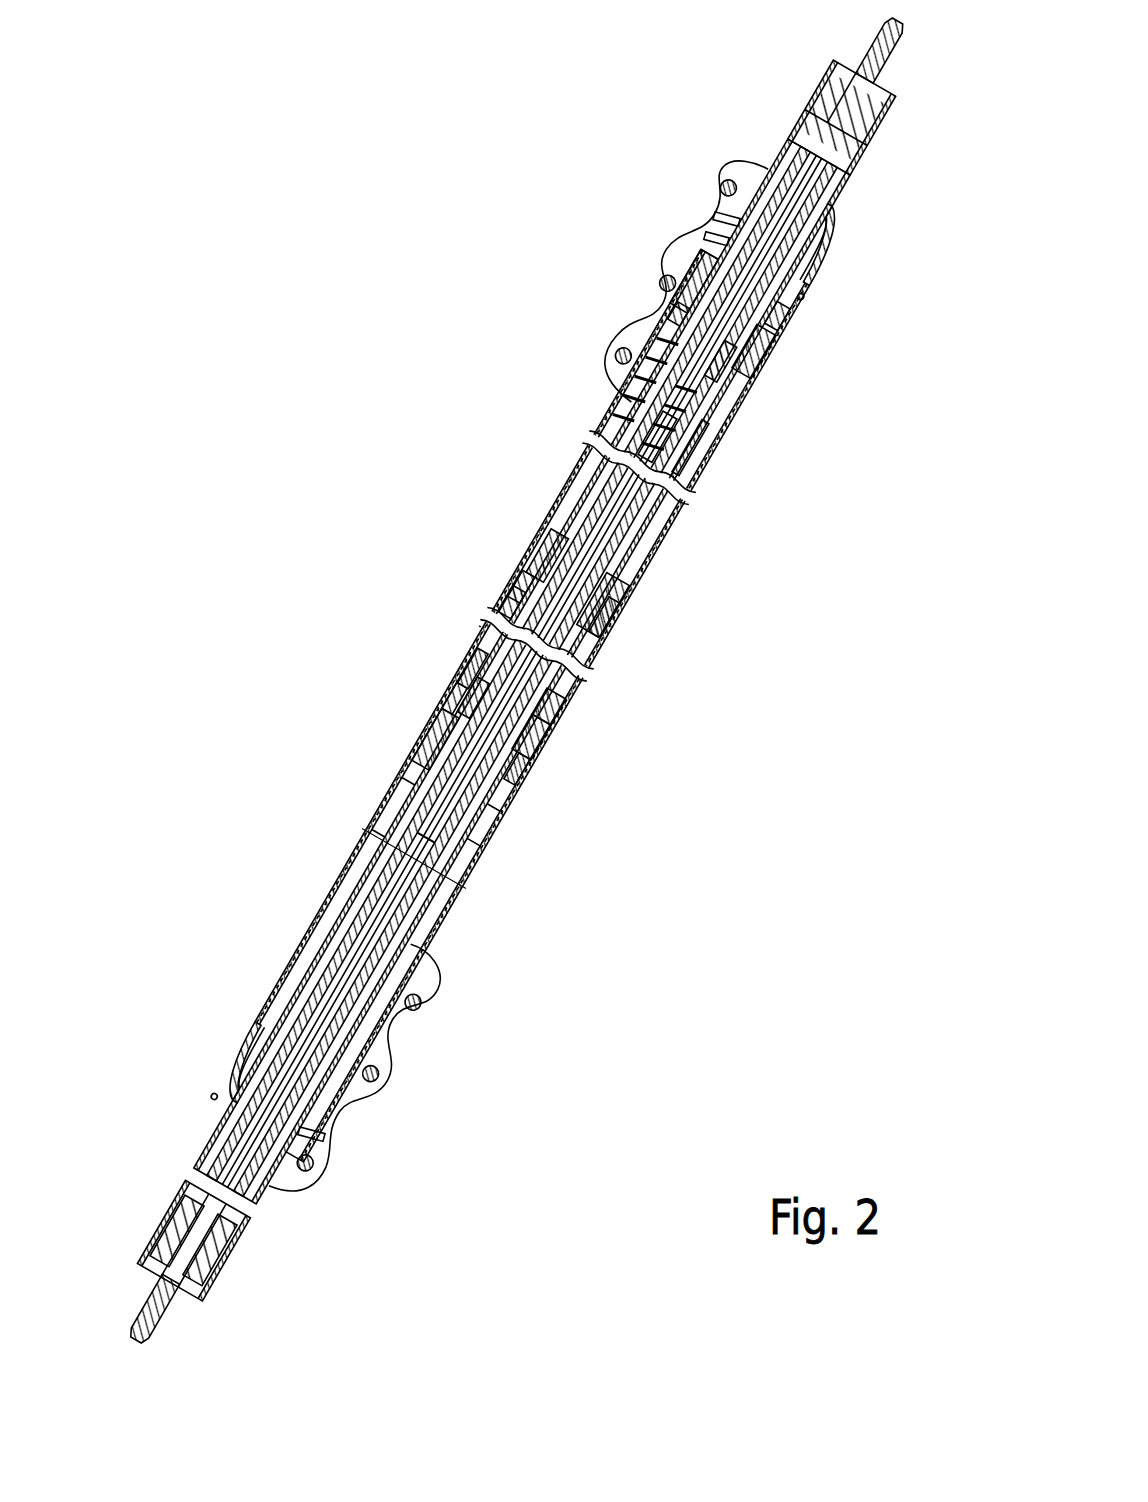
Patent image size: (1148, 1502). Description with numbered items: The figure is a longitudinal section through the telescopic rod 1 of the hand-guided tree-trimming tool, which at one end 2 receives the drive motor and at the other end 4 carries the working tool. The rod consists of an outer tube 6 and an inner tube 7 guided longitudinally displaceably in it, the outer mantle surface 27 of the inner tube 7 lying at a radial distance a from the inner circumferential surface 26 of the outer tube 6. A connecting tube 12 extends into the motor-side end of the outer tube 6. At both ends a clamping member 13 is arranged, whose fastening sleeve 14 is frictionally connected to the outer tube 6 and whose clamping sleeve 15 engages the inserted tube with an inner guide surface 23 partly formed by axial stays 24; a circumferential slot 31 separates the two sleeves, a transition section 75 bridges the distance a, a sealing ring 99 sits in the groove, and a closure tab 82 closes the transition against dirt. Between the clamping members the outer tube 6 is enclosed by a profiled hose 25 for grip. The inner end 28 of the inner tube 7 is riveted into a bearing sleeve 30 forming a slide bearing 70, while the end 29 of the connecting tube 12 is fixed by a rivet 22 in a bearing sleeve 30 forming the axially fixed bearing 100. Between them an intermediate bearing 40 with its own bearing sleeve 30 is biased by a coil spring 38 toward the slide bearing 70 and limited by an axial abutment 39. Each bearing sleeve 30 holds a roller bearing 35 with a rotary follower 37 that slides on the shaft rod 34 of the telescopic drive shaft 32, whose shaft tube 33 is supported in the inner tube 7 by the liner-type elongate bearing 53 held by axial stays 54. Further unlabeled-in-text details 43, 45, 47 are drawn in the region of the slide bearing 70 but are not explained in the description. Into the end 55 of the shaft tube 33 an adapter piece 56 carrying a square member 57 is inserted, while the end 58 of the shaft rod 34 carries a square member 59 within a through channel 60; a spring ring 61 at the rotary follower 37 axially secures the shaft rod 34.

The telescopic rod 1 is at (347, 552).
The end 2 is at (594, 330).
The other end 4 is at (236, 998).
The outer tube 6 is at (410, 760).
The inner tube 7 is at (450, 910).
The connecting tube 12 is at (812, 100).
The clamping member 13 is at (688, 262).
The fastening sleeve 14 is at (733, 443).
The clamping sleeve 15 is at (840, 217).
The rivet 22 is at (690, 300).
The inner circumferential guide surface 23 is at (827, 270).
The axial stays 24 is at (837, 247).
The profiled hose 25 is at (470, 862).
The inner circumferential surface 26 is at (395, 790).
The outer mantle surface 27 is at (787, 150).
The inner end 28 is at (445, 700).
The end 29 is at (757, 350).
The bearing sleeve 30 is at (766, 365).
The circumferential slot 31 is at (716, 238).
The telescopic drive shaft 32 is at (470, 838).
The shaft tube 33 is at (396, 936).
The shaft rod 34 is at (853, 157).
The roller bearing 35 is at (603, 627).
The rotary follower 37 is at (467, 697).
The coil spring 38 is at (700, 455).
The axial abutment 39 is at (528, 580).
The intermediate bearing 40 is at (547, 553).
The seal 43 is at (543, 750).
The piston 45 is at (490, 821).
The guide ring 47 is at (527, 780).
The elongate bearing 53 is at (172, 1208).
The axial stays 54 is at (150, 1242).
The end 55 is at (226, 1226).
The adapter piece 56 is at (176, 1286).
The square member 57 is at (142, 1316).
The end 58 is at (850, 80).
The square member 59 is at (895, 40).
The through channel 60 is at (690, 477).
The spring ring 61 is at (690, 345).
The slide bearing 70 is at (560, 724).
The transition section 75 is at (790, 320).
The closure tab 82 is at (700, 240).
The sealing ring 99 is at (802, 302).
The axially fixed bearing 100 is at (680, 280).
The radial distance a is at (345, 852).